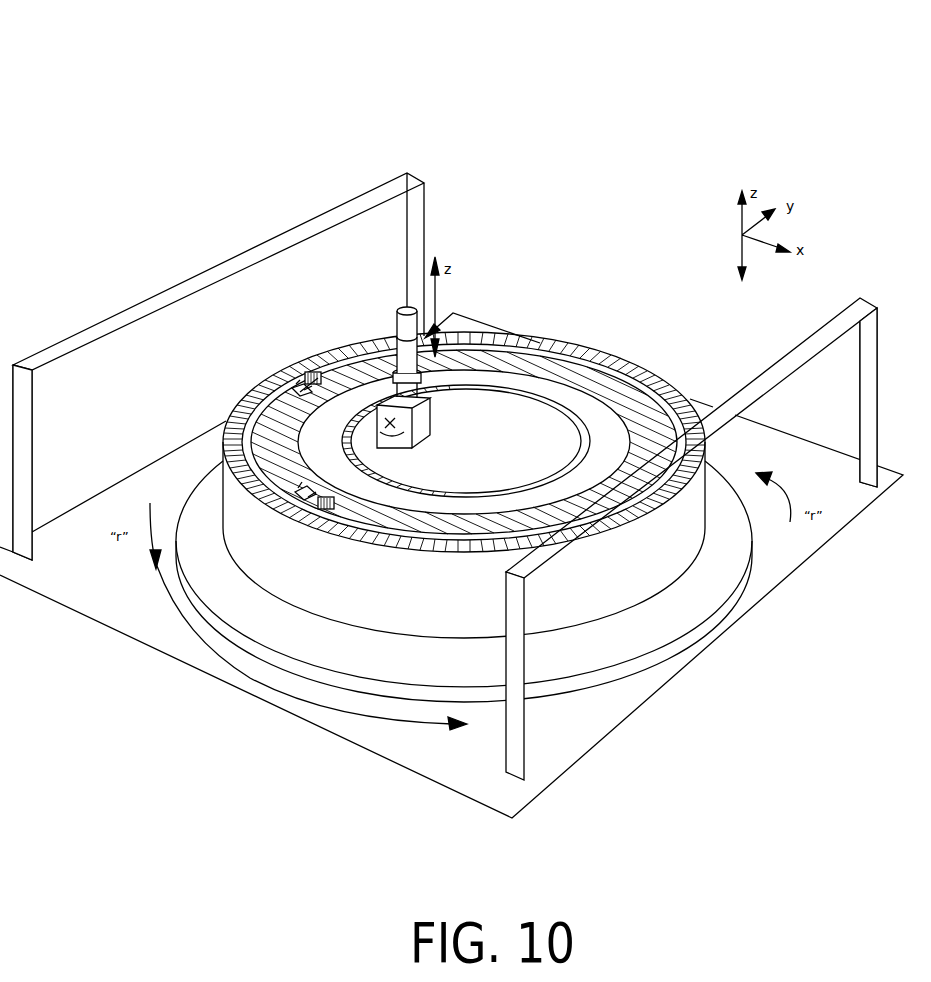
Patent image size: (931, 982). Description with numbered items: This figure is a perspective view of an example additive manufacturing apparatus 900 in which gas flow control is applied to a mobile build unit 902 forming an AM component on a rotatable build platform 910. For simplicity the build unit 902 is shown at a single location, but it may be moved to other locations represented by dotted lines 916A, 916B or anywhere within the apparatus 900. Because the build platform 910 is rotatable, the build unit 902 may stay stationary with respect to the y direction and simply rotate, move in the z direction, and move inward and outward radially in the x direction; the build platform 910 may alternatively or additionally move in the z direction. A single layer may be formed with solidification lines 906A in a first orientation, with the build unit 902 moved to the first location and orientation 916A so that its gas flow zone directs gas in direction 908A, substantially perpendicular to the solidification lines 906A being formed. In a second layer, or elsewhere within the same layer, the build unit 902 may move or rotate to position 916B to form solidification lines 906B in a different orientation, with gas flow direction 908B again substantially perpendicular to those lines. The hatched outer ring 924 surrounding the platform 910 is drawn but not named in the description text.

The apparatus 900 is at (234, 110).
The mobile build unit 902 is at (421, 409).
The solidification lines in a first orientation 906A is at (306, 387).
The solidification lines in a second orientation 906B is at (344, 471).
The gas flow direction 908A is at (292, 390).
The gas flow direction 908B is at (297, 498).
The rotatable build platform 910 is at (570, 376).
The first location and orientation 916A is at (327, 371).
The second position 916B is at (329, 512).
The hatched ring surface 924 is at (619, 362).